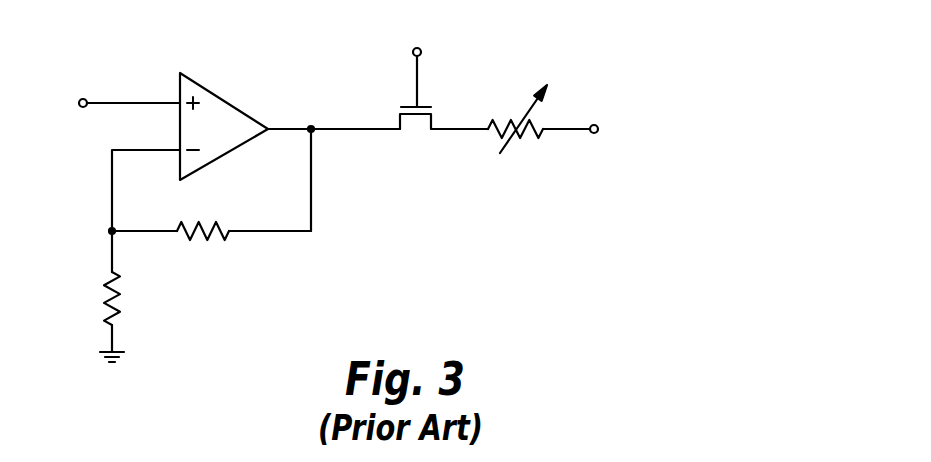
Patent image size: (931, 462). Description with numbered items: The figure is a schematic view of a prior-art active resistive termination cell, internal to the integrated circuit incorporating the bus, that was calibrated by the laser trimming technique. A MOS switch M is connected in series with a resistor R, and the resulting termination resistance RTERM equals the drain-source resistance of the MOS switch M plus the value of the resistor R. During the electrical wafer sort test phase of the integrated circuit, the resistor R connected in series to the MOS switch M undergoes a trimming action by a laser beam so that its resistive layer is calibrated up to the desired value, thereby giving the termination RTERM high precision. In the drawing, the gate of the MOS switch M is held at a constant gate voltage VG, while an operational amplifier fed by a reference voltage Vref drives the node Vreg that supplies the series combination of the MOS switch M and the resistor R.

The reference voltage input Vref is at (106, 104).
The regulated voltage node Vreg is at (344, 107).
The MOS switch M is at (413, 92).
The gate voltage VG=COST VG is at (415, 33).
The resistor R is at (517, 119).
The resistive termination RTERM is at (686, 136).